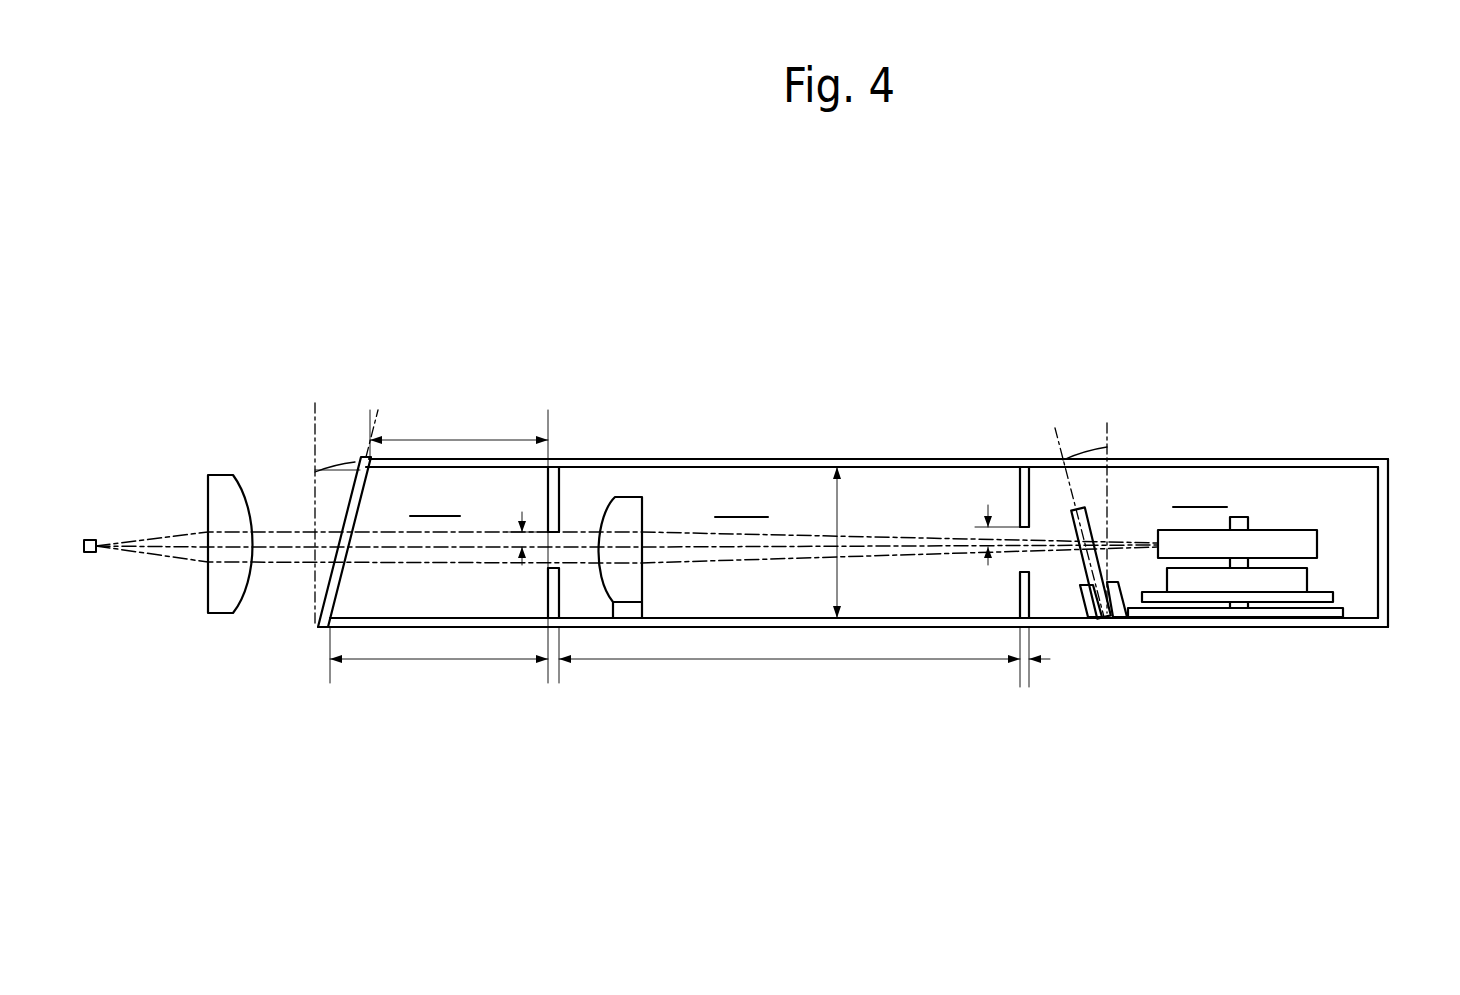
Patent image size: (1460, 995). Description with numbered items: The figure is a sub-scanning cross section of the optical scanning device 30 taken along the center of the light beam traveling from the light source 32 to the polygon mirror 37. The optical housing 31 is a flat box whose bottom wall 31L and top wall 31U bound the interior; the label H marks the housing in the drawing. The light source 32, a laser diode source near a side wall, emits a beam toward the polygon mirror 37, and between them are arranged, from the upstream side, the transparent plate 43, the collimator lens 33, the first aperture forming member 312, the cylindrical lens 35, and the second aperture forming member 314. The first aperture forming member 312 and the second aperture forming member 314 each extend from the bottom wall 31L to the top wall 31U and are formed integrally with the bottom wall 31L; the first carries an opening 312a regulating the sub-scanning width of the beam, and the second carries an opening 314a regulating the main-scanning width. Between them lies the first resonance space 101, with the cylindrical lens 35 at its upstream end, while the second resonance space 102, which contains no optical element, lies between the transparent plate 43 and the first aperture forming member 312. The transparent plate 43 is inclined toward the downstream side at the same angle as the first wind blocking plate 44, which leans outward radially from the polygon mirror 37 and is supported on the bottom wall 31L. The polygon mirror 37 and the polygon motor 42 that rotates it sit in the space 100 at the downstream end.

The optical scanning device 30 is at (1317, 448).
The optical housing 31 is at (853, 546).
The top wall 31U is at (853, 458).
The bottom wall 31L is at (837, 630).
The light source 32 is at (90, 553).
The collimator lens 33 is at (238, 609).
The cylindrical lens 35 is at (597, 577).
The polygon mirror 37 is at (1317, 543).
The polygon motor 42 is at (1278, 582).
The transparent plate 43 is at (343, 517).
The first wind blocking plate 44 is at (1103, 572).
The first aperture forming member 312 is at (549, 592).
The opening 312a is at (548, 566).
The second aperture forming member 314 is at (1023, 597).
The opening 314a is at (1022, 571).
The space 100 is at (1200, 491).
The first resonance space 101 is at (741, 501).
The second resonance space 102 is at (435, 500).
The housing height reference H is at (599, 458).